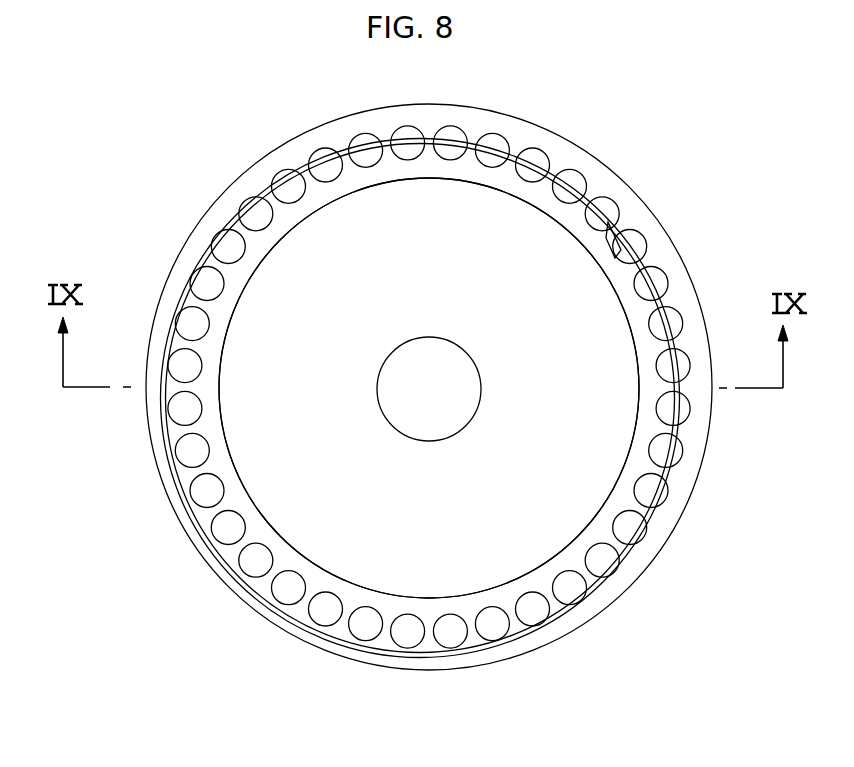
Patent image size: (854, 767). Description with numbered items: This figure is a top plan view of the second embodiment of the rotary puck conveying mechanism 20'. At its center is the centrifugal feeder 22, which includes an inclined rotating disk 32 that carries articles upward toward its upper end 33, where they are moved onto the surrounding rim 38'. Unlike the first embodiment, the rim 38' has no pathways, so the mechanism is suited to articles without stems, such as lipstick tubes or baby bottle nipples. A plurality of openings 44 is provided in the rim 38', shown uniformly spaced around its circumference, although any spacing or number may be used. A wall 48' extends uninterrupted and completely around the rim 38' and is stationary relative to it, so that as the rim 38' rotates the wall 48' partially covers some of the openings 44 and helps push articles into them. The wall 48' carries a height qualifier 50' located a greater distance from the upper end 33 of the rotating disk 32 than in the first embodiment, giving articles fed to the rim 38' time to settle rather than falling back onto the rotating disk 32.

The rotary puck conveying mechanism 20' is at (429, 386).
The upper end 33 is at (325, 203).
The rotating disk 32 is at (271, 491).
The centrifugal feeder 22 is at (534, 461).
The openings 44 is at (524, 612).
The wall 48' is at (455, 398).
The rim 38' is at (456, 398).
The height qualifier 50' is at (580, 260).